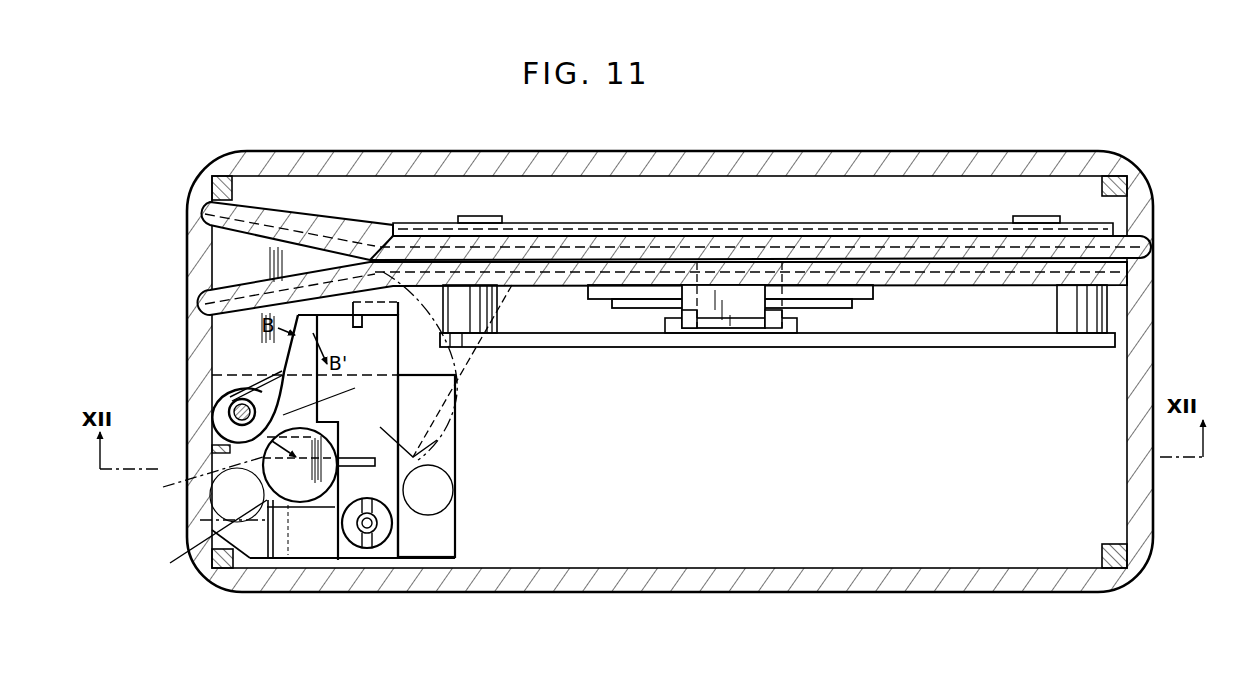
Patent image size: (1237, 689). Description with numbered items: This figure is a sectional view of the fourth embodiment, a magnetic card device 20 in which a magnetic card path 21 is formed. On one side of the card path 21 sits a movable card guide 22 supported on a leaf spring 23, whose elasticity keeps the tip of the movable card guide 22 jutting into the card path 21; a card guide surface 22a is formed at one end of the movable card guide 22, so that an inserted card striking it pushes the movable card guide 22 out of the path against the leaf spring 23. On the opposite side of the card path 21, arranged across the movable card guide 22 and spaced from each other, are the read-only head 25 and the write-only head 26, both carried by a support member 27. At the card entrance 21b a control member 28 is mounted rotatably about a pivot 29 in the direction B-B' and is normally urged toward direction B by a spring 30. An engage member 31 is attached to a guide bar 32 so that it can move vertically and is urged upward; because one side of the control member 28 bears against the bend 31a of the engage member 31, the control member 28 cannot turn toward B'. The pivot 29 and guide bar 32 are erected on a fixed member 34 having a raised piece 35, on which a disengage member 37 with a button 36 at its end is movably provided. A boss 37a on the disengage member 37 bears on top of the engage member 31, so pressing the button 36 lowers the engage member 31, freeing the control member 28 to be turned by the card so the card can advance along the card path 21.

The device 20 is at (939, 150).
The magnetic card path 21 is at (963, 252).
The card entrance 21b is at (190, 240).
The movable card guide 22 is at (843, 222).
The card guide surface 22a is at (406, 250).
The leaf spring 23 is at (485, 216).
The read-only head 25 is at (692, 320).
The write-only head 26 is at (771, 320).
The support member 27 is at (915, 337).
The control member 28 is at (227, 262).
The pivot 29 is at (229, 413).
The spring 30 is at (236, 391).
The engage member 31 is at (393, 466).
The bend 31a is at (340, 320).
The guide bar 32 is at (368, 535).
The fixed member 34 is at (458, 446).
The raised piece 35 is at (207, 538).
The button 36 is at (305, 485).
The disengage member 37 is at (215, 471).
The boss 37a is at (376, 463).